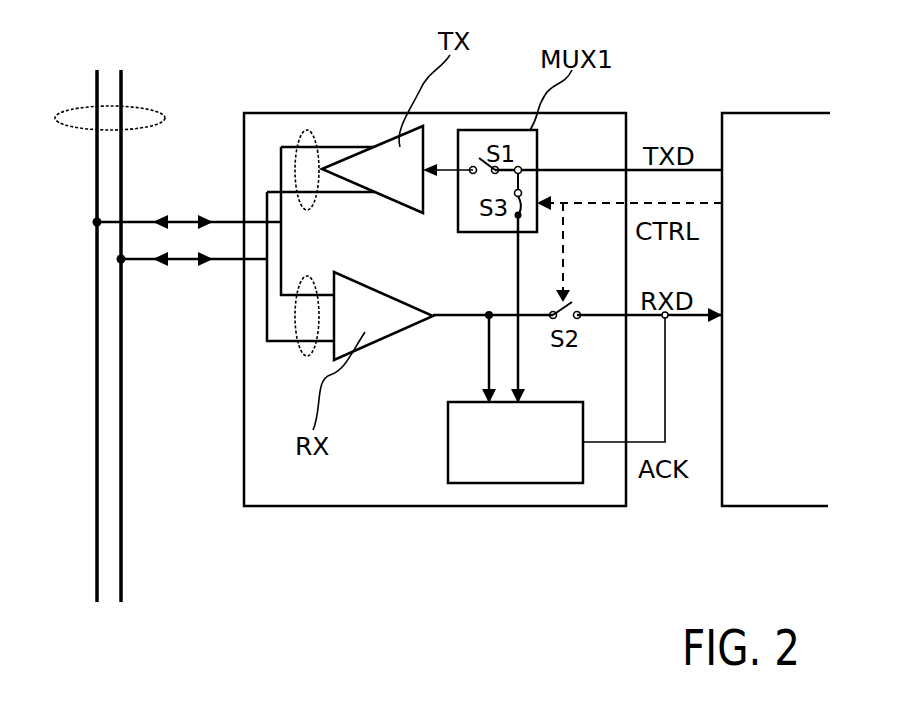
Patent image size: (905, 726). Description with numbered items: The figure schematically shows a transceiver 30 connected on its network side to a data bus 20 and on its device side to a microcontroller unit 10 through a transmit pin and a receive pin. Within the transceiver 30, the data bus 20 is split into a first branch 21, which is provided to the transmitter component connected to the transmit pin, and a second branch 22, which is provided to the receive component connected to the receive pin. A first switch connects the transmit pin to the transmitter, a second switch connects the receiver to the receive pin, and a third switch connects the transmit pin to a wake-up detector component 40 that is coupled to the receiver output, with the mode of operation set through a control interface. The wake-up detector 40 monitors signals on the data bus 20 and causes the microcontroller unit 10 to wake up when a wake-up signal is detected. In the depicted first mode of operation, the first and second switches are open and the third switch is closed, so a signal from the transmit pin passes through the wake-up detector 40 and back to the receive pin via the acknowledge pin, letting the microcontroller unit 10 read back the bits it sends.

The microcontroller unit 10 is at (735, 128).
The data bus 20 is at (216, 101).
The first branch 21 is at (303, 130).
The second branch 22 is at (305, 356).
The transceiver 30 is at (330, 121).
The wake-up detector component 40 is at (505, 473).